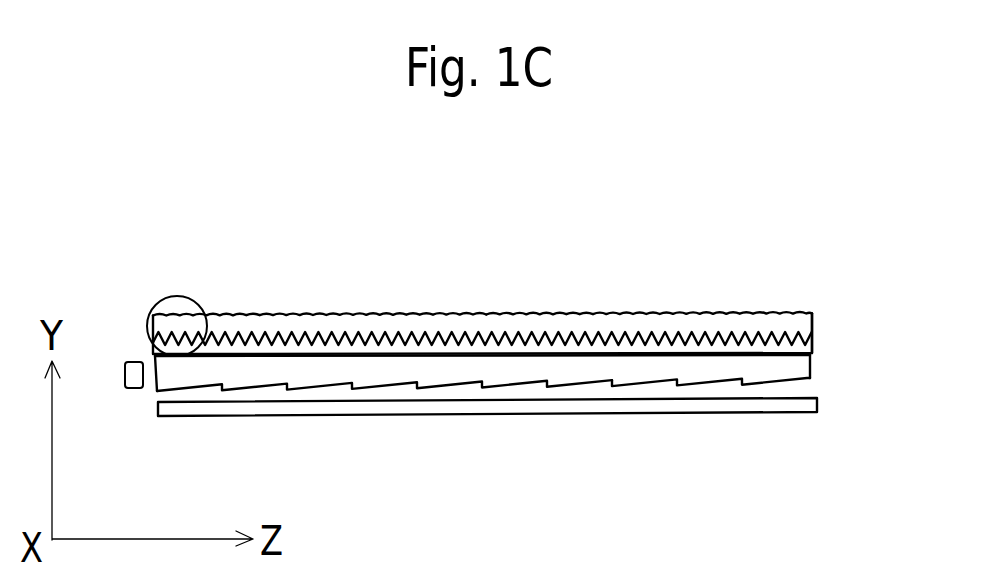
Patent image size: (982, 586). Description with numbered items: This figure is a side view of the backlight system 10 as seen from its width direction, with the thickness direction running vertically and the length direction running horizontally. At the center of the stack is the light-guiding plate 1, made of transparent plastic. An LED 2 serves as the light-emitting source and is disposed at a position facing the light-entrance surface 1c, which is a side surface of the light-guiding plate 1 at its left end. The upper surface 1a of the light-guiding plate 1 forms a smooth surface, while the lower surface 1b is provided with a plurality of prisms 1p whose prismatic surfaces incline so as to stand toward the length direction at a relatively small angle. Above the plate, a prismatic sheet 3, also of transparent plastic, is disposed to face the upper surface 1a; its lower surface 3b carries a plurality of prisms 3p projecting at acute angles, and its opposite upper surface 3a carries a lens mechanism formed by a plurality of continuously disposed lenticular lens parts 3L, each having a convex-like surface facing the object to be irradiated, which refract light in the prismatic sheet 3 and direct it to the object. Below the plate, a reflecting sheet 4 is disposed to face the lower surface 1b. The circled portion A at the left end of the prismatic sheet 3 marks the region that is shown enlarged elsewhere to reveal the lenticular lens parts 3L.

The light-guiding plate 1 is at (798, 372).
The upper surface of the light-guiding plate 1a is at (812, 363).
The lower surface of the light-guiding plate 1b is at (613, 382).
The light-entrance surface 1c is at (155, 385).
The prisms of the light-guiding plate 1p is at (563, 386).
The LED 2 is at (135, 362).
The prismatic sheet 3 is at (634, 326).
The upper surface of the prismatic sheet 3a is at (568, 313).
The lower surface of the prismatic sheet 3b is at (752, 342).
The lenticular lens parts 3L is at (740, 314).
The prisms of the prismatic sheet 3p is at (813, 318).
The reflecting sheet 4 is at (337, 414).
The backlight system 10 is at (378, 295).
The portion A is at (202, 312).